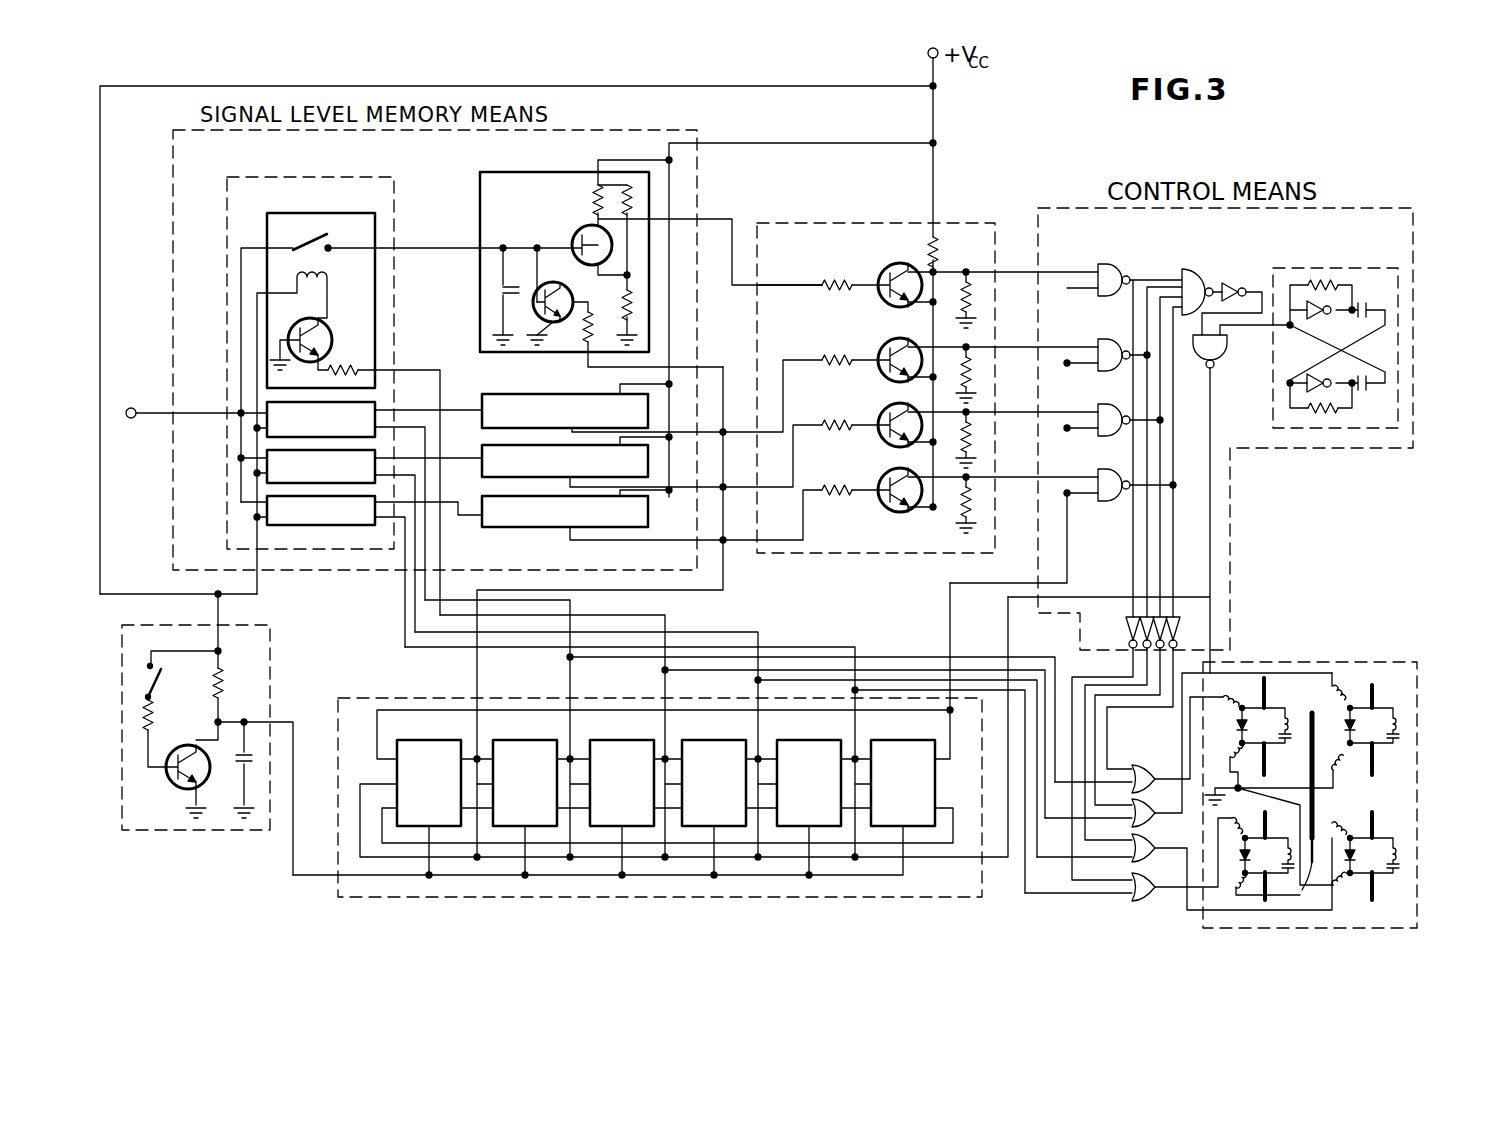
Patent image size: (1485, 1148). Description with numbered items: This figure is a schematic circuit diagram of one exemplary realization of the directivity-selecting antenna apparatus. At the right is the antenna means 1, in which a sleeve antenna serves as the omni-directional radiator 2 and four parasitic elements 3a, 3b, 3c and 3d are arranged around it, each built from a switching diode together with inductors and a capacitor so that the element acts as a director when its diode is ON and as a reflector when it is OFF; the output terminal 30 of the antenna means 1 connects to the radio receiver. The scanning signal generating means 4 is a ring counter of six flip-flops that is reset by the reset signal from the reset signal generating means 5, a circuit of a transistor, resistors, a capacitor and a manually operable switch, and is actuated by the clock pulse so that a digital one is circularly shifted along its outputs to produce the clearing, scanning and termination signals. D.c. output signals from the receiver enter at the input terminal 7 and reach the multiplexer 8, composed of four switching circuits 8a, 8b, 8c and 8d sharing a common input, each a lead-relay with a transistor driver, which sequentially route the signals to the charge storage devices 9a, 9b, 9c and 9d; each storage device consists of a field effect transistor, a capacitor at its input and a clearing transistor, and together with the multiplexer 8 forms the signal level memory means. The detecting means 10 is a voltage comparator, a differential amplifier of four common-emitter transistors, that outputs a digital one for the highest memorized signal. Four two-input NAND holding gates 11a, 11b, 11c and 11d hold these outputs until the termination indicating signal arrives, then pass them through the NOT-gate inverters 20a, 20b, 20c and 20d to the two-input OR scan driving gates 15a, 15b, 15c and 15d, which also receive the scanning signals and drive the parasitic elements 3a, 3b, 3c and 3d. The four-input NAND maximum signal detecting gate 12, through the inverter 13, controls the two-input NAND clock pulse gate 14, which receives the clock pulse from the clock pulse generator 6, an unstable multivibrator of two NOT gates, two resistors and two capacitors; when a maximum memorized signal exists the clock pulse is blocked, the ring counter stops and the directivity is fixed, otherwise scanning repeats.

The antenna means 1 is at (1383, 665).
The omni-directional radiator 2 is at (1314, 750).
The parasitic element 3a is at (1267, 705).
The parasitic element 3b is at (1373, 697).
The parasitic element 3c is at (1374, 832).
The parasitic element 3d is at (1262, 832).
The scanning signal generating means 4 is at (615, 896).
The reset signal generating means 5 is at (130, 650).
The clock pulse generator 6 is at (1370, 279).
The input terminal 7 is at (130, 419).
The multiplexer 8 is at (362, 178).
The switching circuit 8a is at (278, 215).
The switching circuit 8b is at (361, 501).
The switching circuit 8c is at (361, 541).
The switching circuit 8d is at (361, 571).
The charge storage device 9a is at (488, 175).
The charge storage device 9b is at (652, 396).
The charge storage device 9c is at (652, 456).
The charge storage device 9d is at (652, 515).
The detecting means 10 is at (962, 224).
The holding gate 11a is at (1105, 275).
The holding gate 11b is at (1106, 340).
The holding gate 11c is at (1106, 406).
The holding gate 11d is at (1106, 471).
The maximum signal detecting gate 12 is at (1196, 270).
The inverter 13 is at (1236, 280).
The clock pulse gate 14 is at (1218, 350).
The scan driving gate 15a is at (1140, 768).
The scan driving gate 15b is at (1140, 812).
The scan driving gate 15c is at (1140, 848).
The scan driving gate 15d is at (1140, 887).
The inverter 20a is at (1178, 622).
The inverter 20b is at (1167, 617).
The inverter 20c is at (1142, 620).
The inverter 20d is at (1125, 622).
The output terminal 30 is at (1295, 886).